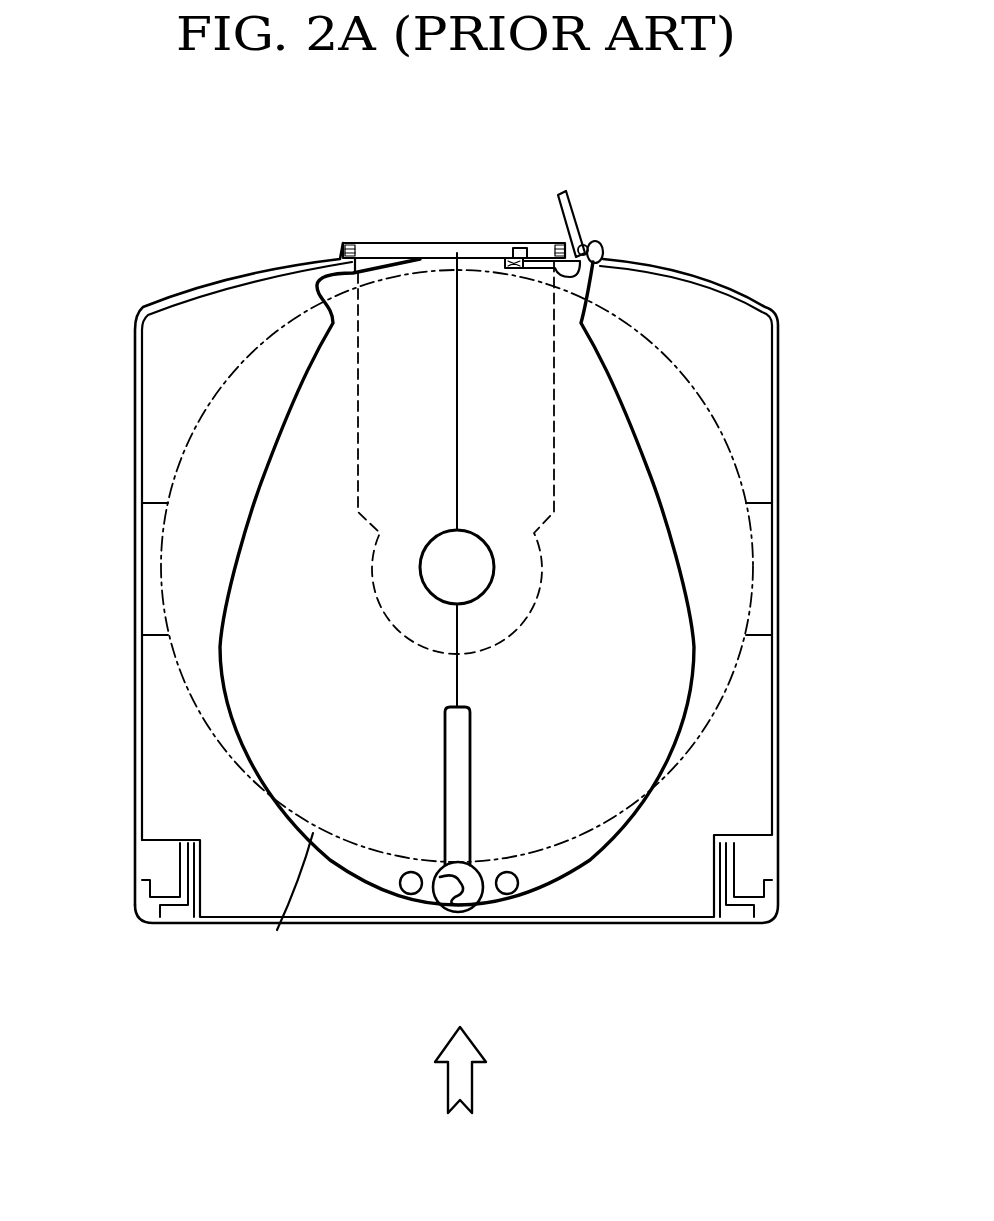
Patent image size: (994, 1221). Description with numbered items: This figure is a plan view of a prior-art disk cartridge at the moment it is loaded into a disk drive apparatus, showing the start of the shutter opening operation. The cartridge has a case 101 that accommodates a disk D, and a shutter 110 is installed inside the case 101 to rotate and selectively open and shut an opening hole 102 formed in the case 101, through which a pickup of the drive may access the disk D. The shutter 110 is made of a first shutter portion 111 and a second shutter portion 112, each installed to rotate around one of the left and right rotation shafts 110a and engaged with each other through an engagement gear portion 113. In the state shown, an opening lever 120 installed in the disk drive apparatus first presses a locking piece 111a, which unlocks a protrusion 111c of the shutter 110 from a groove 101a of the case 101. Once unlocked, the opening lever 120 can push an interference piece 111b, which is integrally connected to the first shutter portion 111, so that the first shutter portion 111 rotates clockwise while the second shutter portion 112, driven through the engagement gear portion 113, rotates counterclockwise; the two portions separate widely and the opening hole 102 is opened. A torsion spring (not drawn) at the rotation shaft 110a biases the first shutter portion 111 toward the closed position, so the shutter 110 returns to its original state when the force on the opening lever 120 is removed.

The case 101 is at (140, 653).
The groove 101a is at (520, 246).
The opening hole 102 is at (370, 462).
The disk D is at (220, 428).
The shutter 110 is at (354, 870).
The rotation shafts 110a is at (408, 896).
The first shutter portion 111 is at (480, 813).
The locking piece 111a is at (593, 246).
The interference piece 111b is at (605, 254).
The protrusion 111c is at (510, 258).
The second shutter portion 112 is at (320, 992).
The engagement gear portion 113 is at (458, 908).
The opening lever 120 is at (572, 190).